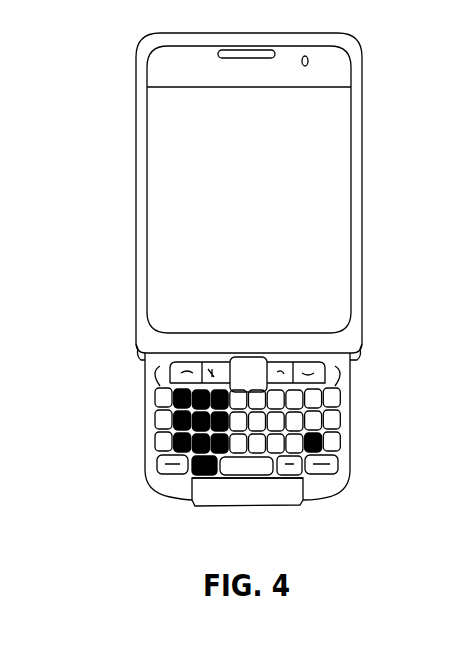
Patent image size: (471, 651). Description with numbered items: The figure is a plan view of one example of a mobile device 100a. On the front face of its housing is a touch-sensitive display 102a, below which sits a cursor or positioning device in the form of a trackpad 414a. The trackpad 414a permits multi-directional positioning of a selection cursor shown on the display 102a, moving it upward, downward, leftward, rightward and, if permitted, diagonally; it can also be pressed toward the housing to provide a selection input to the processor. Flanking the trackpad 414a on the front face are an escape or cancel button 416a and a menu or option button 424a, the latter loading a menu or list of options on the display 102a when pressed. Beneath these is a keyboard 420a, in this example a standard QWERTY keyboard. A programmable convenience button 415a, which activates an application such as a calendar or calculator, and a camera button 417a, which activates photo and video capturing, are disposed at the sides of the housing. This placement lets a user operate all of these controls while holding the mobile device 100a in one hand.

The mobile device 100a is at (126, 75).
The touch-sensitive display 102a is at (352, 160).
The trackpad 414a is at (245, 357).
The convenience button 415a is at (140, 348).
The camera button 417a is at (362, 352).
The menu or option button 424a is at (158, 398).
The escape or cancel button 416a is at (336, 400).
The keyboard 420a is at (153, 469).